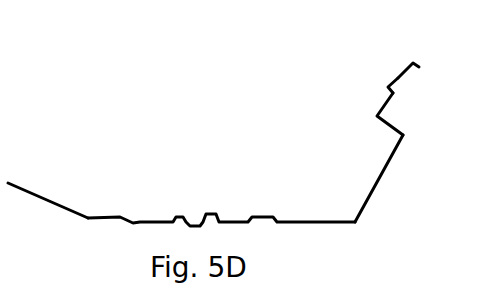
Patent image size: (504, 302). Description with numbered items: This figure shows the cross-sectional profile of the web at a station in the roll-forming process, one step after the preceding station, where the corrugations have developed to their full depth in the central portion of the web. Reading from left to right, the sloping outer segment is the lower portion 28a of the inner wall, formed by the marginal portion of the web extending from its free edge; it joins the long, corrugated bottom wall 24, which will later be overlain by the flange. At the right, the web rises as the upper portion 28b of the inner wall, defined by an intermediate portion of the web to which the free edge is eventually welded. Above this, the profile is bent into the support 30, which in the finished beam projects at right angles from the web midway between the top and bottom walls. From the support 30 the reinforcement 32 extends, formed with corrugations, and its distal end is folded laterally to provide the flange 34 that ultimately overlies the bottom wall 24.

The bottom wall 24 is at (105, 220).
The lower portion of inner wall 28a is at (45, 197).
The upper portion of inner wall 28b is at (386, 172).
The support 30 is at (395, 128).
The reinforcement 32 is at (395, 80).
The flange 34 is at (420, 63).